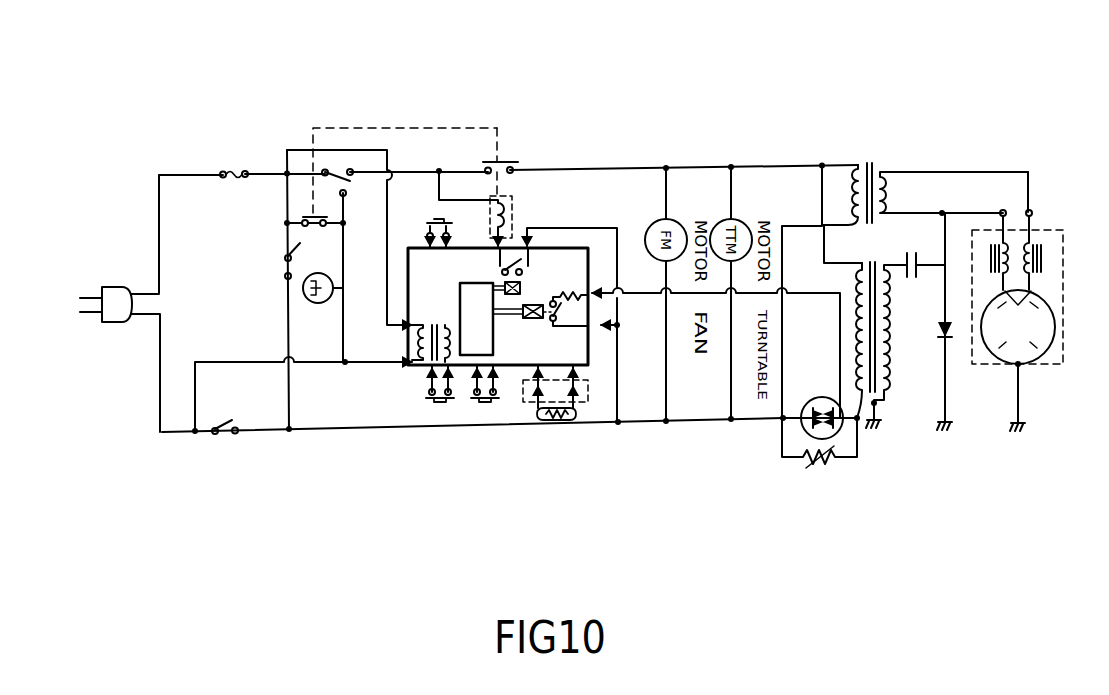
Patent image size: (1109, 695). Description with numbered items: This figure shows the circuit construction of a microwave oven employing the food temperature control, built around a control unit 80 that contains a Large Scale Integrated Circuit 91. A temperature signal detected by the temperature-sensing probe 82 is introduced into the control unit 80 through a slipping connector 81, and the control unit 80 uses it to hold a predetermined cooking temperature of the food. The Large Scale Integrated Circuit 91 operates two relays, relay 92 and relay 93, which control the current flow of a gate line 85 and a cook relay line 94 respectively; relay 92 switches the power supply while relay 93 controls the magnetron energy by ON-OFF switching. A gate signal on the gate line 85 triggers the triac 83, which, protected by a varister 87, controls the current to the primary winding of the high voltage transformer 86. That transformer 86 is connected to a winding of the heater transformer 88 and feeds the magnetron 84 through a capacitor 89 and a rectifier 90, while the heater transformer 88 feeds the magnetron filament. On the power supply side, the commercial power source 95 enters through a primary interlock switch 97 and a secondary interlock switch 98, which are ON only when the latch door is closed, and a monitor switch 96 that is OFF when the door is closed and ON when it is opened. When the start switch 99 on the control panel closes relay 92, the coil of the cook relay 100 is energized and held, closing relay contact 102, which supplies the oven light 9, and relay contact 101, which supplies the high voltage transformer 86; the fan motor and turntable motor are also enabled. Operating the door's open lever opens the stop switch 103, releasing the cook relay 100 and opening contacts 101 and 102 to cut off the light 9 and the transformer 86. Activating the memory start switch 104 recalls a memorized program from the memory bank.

The oven light 9 is at (318, 303).
The control unit 80 is at (570, 263).
The slipping connector 81 is at (588, 400).
The temperature-sensing probe 82 is at (565, 422).
The triac 83 is at (803, 438).
The magnetron 84 is at (985, 365).
The gate line 85 is at (645, 297).
The high voltage transformer 86 is at (902, 372).
The varister 87 is at (822, 468).
The heater transformer 88 is at (877, 170).
The capacitor 89 is at (913, 279).
The rectifier 90 is at (940, 338).
The Large Scale Integrated Circuit 91 is at (473, 350).
The relay 92 is at (522, 282).
The relay 93 is at (528, 325).
The cook relay line 94 is at (583, 228).
The commercial power source 95 is at (108, 322).
The monitor switch 96 is at (273, 267).
The primary interlock switch 97 is at (228, 437).
The secondary interlock switch 98 is at (333, 170).
The start switch 99 is at (438, 403).
The cook relay 100 is at (512, 205).
The relay contact 101 is at (508, 158).
The relay contact 102 is at (308, 212).
The stop switch 103 is at (433, 222).
The memory start switch 104 is at (490, 403).